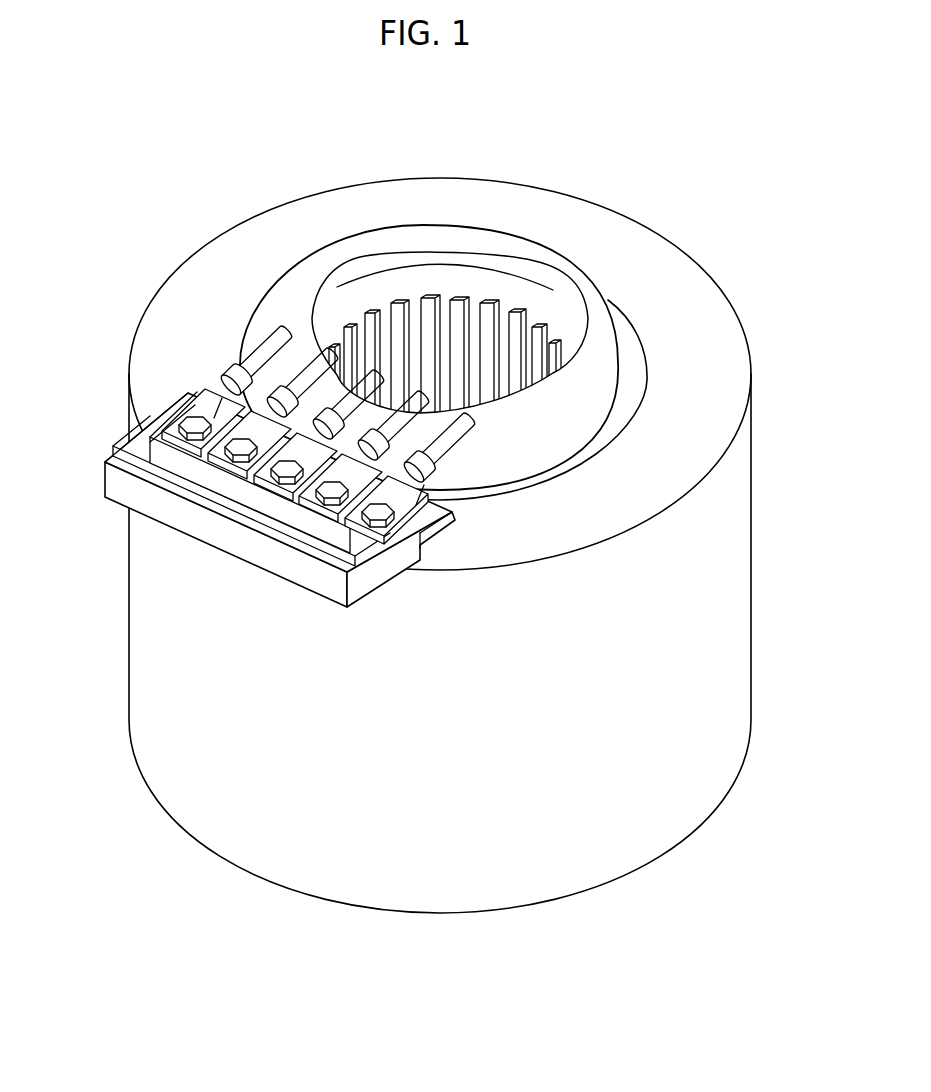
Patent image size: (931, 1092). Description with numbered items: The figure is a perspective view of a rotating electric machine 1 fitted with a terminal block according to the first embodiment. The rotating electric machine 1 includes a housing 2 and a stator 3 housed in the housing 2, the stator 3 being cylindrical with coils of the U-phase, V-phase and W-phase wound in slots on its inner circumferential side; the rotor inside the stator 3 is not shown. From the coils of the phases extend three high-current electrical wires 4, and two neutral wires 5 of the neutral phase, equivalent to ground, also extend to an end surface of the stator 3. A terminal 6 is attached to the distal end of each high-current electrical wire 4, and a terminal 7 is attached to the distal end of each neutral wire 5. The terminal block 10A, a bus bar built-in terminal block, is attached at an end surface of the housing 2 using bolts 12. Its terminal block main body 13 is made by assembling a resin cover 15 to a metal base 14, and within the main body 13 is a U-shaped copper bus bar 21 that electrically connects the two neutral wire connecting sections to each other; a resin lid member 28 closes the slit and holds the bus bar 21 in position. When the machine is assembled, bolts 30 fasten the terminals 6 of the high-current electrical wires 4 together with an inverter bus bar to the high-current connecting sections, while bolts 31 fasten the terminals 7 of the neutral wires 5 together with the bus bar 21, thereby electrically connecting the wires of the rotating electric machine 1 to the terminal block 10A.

The rotating electric machine 1 is at (634, 158).
The housing 2 is at (740, 571).
The stator 3 is at (633, 357).
The high-current electrical wires 4 is at (393, 427).
The neutral wires 5 is at (253, 355).
The terminal 6 is at (262, 465).
The terminal 7 is at (208, 405).
The terminal block 10A is at (285, 483).
The bolts 12 is at (447, 518).
The terminal block main body 13 is at (147, 406).
The base 14 is at (432, 542).
The cover 15 is at (368, 580).
The bus bar 21 is at (128, 443).
The lid member 28 is at (187, 525).
The bolts 30 is at (235, 455).
The bolts 31 is at (143, 428).